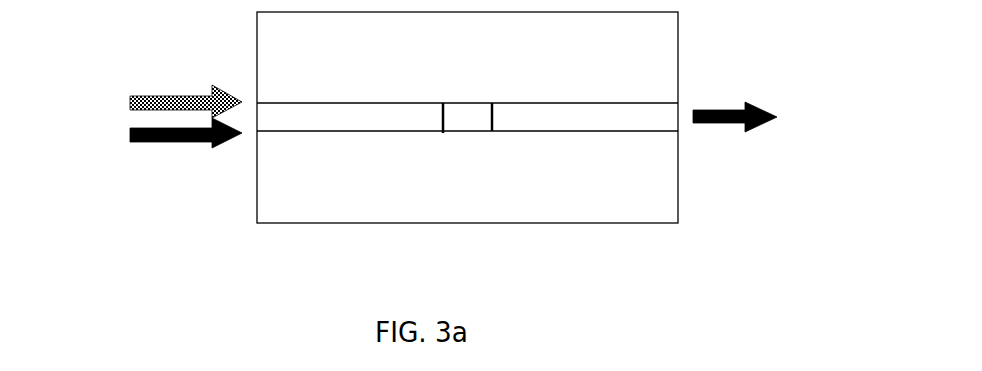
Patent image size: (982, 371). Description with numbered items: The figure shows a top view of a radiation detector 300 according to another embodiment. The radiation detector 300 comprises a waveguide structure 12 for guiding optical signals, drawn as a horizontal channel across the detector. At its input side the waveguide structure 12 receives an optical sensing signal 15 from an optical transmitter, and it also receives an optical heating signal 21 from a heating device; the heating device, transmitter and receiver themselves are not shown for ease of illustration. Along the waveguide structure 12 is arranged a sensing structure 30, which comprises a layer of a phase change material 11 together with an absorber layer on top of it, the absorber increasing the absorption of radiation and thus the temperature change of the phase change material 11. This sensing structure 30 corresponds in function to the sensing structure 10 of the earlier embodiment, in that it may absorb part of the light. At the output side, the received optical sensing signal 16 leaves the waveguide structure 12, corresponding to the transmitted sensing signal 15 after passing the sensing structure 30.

The radiation detector 300 is at (829, 320).
The sensing structure 10 is at (495, 112).
The phase change material 11 is at (463, 113).
The waveguide structure 12 is at (603, 115).
The sensing structure 30 is at (434, 149).
The optical heating signal 21 is at (130, 103).
The optical sensing signal 15 is at (130, 135).
The received optical sensing signal 16 is at (725, 125).